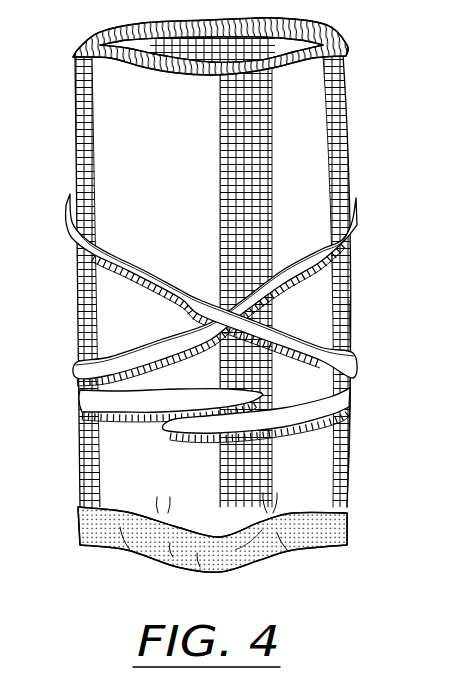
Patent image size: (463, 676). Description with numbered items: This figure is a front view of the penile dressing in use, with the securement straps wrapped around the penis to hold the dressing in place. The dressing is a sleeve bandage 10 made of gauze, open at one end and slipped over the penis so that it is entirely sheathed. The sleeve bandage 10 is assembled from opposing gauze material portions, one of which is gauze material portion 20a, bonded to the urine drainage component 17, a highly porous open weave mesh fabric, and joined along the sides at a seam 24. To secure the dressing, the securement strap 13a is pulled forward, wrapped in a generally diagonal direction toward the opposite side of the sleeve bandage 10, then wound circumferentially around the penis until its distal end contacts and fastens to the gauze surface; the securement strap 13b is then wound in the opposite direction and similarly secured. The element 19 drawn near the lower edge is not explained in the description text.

The dressing assembly 10 is at (66, 465).
The mesh strap 20a is at (323, 162).
The side panel 24 is at (347, 467).
The first fastening strap 13a is at (115, 403).
The second fastening strap 13b is at (340, 407).
The lower cuff band 17 is at (180, 523).
The lower edge 19 is at (262, 530).